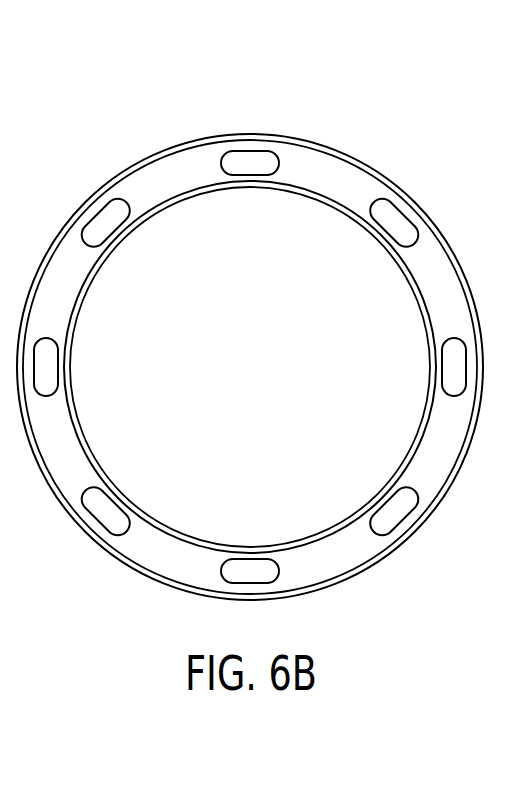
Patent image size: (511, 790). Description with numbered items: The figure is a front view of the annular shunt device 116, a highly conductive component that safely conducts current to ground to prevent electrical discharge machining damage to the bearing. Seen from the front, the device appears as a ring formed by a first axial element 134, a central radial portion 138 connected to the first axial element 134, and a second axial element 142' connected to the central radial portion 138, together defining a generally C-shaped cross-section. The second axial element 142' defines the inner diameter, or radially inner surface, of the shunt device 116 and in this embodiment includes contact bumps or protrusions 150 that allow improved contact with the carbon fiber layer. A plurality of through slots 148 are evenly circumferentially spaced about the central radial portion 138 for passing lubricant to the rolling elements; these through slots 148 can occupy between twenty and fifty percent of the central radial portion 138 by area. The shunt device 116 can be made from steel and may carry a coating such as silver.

The shunt device 116 is at (330, 119).
The first axial element 134 is at (242, 135).
The central radial portion 138 is at (173, 161).
The second axial element 142' is at (250, 367).
The through slots 148 is at (385, 218).
The contact bumps or protrusions 150 is at (318, 200).